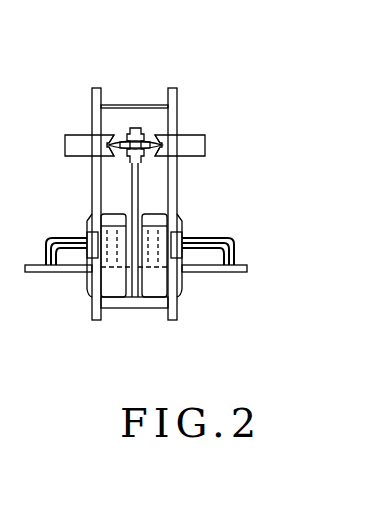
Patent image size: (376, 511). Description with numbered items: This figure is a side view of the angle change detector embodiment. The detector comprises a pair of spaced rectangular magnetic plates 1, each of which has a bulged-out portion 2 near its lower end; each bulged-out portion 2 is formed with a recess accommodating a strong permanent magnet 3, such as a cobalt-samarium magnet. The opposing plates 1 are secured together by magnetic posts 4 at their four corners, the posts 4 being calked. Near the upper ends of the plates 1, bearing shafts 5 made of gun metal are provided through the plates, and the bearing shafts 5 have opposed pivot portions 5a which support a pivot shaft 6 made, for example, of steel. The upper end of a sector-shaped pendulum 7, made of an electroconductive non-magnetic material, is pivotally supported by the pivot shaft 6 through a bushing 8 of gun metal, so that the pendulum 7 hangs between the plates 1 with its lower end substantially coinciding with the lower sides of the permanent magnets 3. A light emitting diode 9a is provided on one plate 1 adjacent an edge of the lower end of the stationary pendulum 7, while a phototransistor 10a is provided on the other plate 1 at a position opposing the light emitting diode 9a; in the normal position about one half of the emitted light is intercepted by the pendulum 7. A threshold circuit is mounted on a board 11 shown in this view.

The magnetic plate 1 is at (90, 104).
The bulged-out portion 2 is at (91, 302).
The permanent magnet 3 is at (108, 300).
The magnetic post 4 is at (134, 106).
The bearing shaft 5 is at (73, 139).
The pivot portion 5a is at (104, 154).
The pivot shaft 6 is at (121, 136).
The pendulum 7 is at (134, 300).
The bushing 8 is at (143, 126).
The light emitting diode 9a is at (87, 237).
The phototransistor 10a is at (184, 238).
The board 11 is at (38, 272).